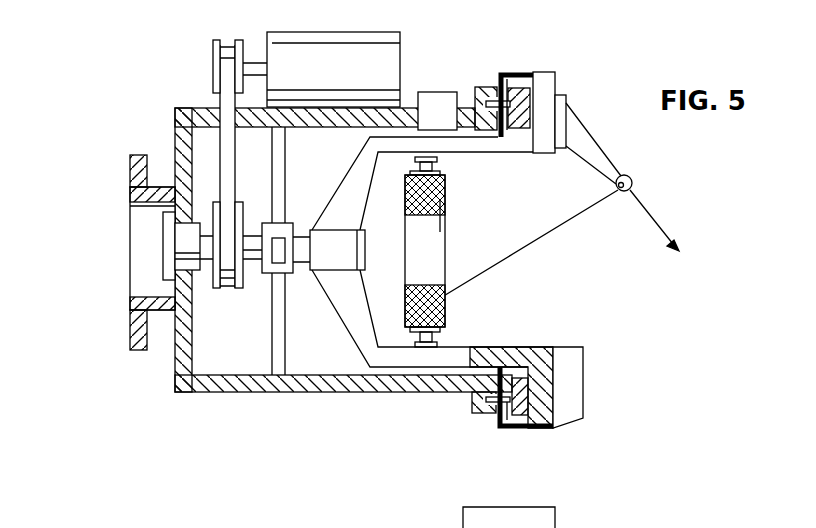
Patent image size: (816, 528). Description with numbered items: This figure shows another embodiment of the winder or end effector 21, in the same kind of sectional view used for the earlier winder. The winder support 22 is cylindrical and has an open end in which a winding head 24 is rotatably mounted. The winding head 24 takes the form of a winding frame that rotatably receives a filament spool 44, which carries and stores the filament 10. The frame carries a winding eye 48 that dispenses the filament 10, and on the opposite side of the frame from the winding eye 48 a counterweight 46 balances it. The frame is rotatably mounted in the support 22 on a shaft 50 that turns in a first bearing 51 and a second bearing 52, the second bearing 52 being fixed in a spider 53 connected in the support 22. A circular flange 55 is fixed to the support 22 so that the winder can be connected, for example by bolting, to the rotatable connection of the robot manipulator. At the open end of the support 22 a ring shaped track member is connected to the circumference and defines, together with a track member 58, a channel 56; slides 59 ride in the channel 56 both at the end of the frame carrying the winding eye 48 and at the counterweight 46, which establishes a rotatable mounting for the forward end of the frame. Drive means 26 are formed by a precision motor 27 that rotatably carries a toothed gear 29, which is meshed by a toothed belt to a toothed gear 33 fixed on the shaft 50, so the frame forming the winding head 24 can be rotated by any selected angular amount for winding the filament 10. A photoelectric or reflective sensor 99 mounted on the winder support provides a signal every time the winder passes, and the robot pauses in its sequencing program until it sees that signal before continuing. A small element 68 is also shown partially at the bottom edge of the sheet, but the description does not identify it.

The filament 10 is at (588, 210).
The winder or end effector 21 is at (162, 386).
The winder support 22 is at (308, 393).
The winding head 24 is at (597, 335).
The drive means 26 is at (192, 78).
The precision motor 27 is at (322, 30).
The toothed gear 29 is at (213, 50).
The toothed gear 33 is at (217, 290).
The filament spool 44 is at (432, 240).
The counterweight 46 is at (575, 405).
The winding eye 48 is at (585, 133).
The shaft 50 is at (257, 262).
The first bearing 51 is at (183, 247).
The second bearing 52 is at (295, 275).
The spider 53 is at (270, 360).
The circular flange 55 is at (130, 313).
The channel 56 is at (478, 88).
The track member 58 is at (532, 102).
The slides 59 is at (505, 110).
The control unit 68 is at (574, 520).
The photoelectric or reflective sensor 99 is at (442, 93).